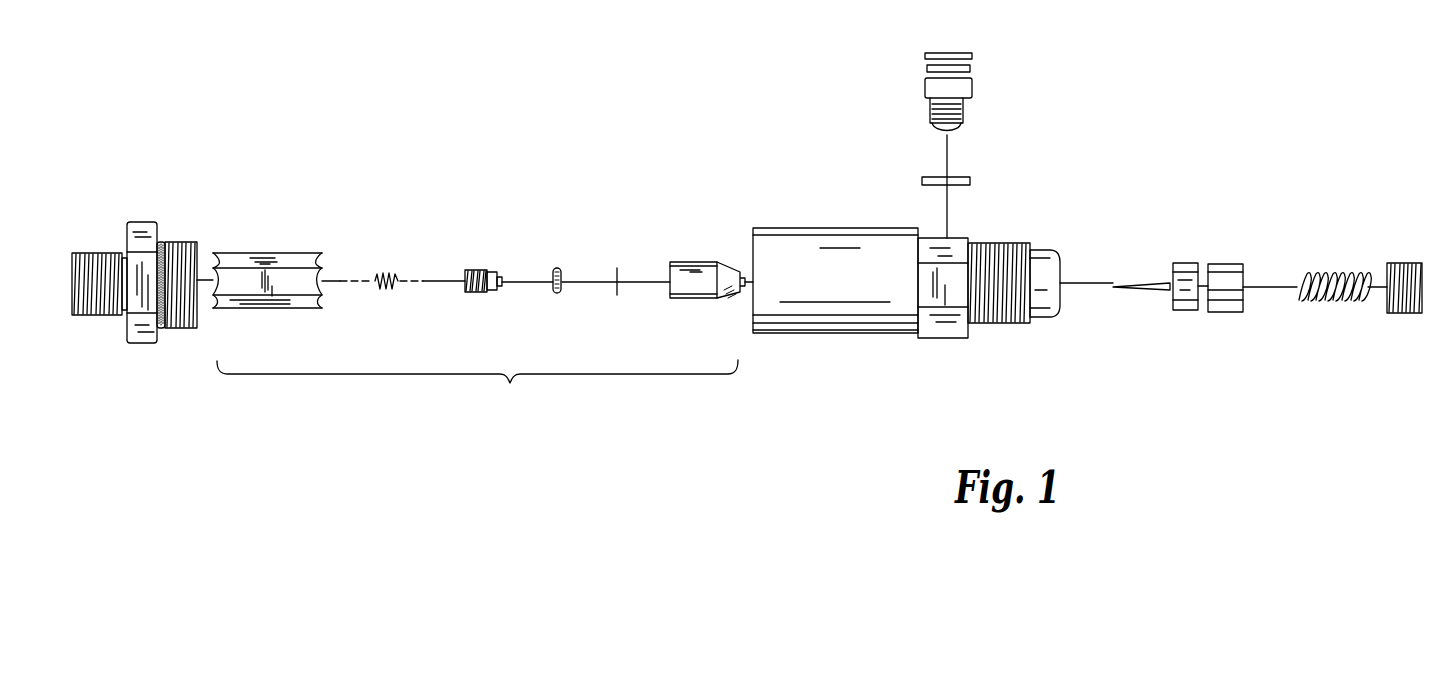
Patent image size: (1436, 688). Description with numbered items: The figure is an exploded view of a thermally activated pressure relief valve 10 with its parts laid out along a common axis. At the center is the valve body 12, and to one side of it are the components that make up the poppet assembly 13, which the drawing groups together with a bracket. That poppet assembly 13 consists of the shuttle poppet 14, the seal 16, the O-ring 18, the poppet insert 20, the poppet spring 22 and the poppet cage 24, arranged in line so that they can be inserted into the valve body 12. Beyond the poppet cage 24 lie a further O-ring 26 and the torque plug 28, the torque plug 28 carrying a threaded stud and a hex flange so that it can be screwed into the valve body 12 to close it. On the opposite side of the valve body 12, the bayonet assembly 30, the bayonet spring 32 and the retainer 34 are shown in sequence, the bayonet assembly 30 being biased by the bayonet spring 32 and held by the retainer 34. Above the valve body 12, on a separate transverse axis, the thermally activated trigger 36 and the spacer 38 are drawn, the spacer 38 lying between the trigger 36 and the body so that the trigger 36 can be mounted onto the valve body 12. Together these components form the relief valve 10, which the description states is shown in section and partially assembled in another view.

The pressure relief valve 10 is at (1068, 138).
The valve body 12 is at (876, 340).
The poppet assembly 13 is at (477, 389).
The shuttle poppet 14 is at (681, 302).
The seal 16 is at (613, 292).
The O-ring 18 is at (552, 293).
The poppet insert 20 is at (478, 292).
The poppet spring 22 is at (378, 290).
The poppet cage 24 is at (298, 308).
The O-ring 26 is at (163, 328).
The torque plug 28 is at (150, 222).
The bayonet assembly 30 is at (1183, 312).
The bayonet spring 32 is at (1330, 301).
The retainer 34 is at (1400, 314).
The thermally activated trigger 36 is at (972, 88).
The spacer 38 is at (970, 181).